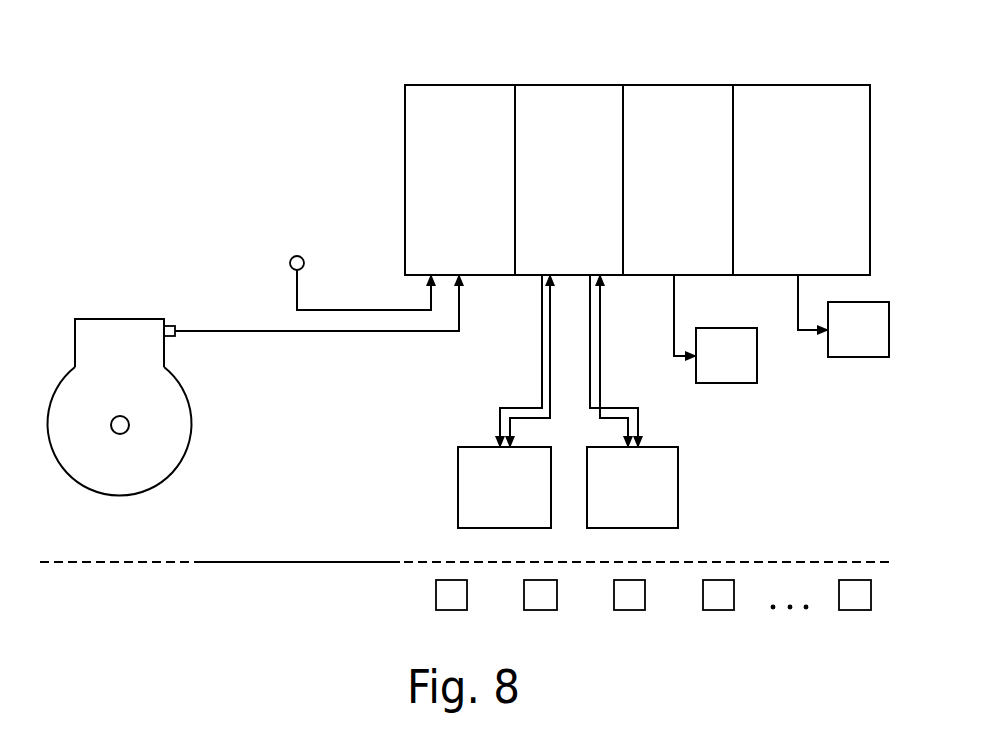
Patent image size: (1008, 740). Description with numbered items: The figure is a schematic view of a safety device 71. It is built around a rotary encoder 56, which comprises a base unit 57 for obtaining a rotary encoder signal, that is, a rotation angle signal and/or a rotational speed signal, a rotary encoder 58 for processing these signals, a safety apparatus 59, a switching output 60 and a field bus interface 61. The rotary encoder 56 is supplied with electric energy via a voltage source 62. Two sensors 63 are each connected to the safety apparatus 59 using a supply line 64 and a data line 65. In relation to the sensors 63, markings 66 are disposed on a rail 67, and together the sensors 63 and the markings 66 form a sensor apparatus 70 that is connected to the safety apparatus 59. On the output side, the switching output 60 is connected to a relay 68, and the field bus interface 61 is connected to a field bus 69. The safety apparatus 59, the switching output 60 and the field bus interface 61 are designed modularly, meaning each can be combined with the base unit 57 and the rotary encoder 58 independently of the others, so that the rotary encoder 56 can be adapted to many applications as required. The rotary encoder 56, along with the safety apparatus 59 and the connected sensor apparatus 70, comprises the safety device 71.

The rotary encoder 56 is at (203, 130).
The base unit 57 is at (119, 327).
The rotary encoder 58 is at (482, 187).
The safety apparatus 59 is at (581, 187).
The switching output 60 is at (691, 187).
The field bus interface 61 is at (809, 187).
The voltage source 62 is at (297, 256).
The sensors 63 is at (458, 469).
The supply line 64 is at (542, 365).
The data line 65 is at (548, 325).
The markings 66 is at (434, 599).
The rail 67 is at (287, 560).
The relay 68 is at (742, 370).
The field bus 69 is at (874, 344).
The sensor apparatus 70 is at (760, 528).
The safety device 71 is at (577, 70).